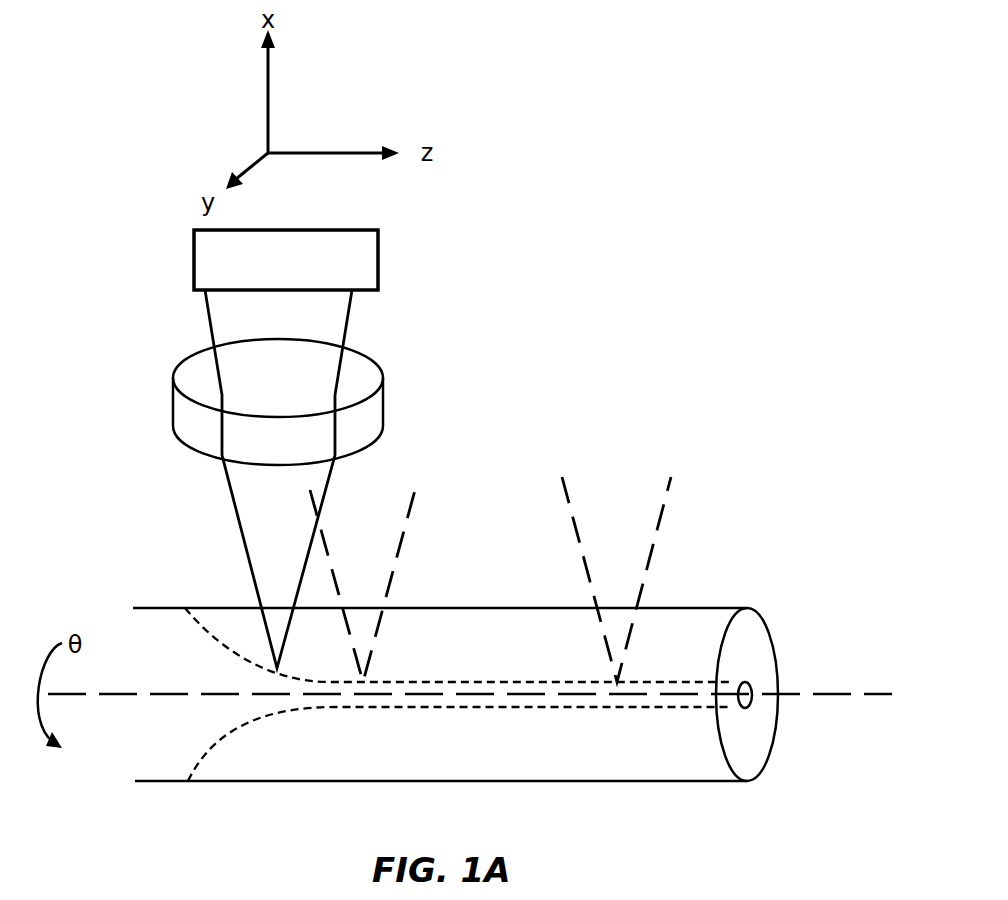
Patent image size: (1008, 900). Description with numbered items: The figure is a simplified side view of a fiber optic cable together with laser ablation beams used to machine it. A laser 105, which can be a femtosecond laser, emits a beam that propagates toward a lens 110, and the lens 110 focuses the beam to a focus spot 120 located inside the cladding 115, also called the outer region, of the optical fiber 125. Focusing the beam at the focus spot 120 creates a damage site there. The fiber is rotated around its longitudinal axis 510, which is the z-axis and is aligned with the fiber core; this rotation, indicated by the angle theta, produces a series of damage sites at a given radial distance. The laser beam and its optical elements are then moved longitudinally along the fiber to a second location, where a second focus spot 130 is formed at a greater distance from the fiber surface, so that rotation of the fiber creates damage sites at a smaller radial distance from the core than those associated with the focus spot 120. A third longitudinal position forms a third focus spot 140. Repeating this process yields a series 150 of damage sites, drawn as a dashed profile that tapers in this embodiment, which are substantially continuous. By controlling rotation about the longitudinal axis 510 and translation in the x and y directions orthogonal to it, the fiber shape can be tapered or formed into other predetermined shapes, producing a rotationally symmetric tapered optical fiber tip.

The laser 105 is at (381, 263).
The lens 110 is at (383, 402).
The cladding 115 is at (566, 765).
The focus spot 120 is at (262, 682).
The optical fiber 125 is at (638, 781).
The second focus spot 130 is at (364, 702).
The third focus spot 140 is at (608, 710).
The series of damage sites 150 is at (437, 682).
The longitudinal axis 510 is at (797, 695).